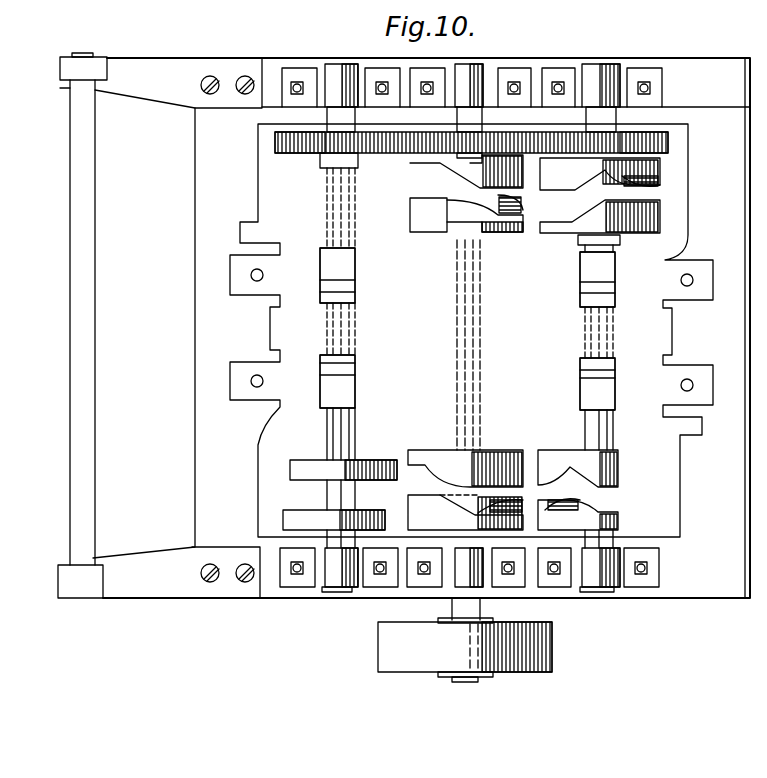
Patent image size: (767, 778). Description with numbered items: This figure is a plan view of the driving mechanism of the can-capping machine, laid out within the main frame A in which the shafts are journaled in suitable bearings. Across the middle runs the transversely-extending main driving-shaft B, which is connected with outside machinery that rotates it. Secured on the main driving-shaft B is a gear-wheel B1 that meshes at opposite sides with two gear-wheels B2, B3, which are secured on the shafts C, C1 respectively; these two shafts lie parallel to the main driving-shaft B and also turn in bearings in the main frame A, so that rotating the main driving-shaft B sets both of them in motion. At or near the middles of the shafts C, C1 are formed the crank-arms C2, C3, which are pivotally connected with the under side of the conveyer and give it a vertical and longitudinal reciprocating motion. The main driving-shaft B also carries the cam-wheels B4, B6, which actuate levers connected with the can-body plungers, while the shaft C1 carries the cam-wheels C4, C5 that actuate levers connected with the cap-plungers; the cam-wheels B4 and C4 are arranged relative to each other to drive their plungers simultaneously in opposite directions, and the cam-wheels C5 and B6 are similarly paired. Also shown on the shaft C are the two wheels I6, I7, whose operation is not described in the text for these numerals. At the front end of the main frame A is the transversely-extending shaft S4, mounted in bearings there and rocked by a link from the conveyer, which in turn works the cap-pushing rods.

The main frame A is at (421, 328).
The transversely-extending shaft S4 is at (67, 325).
The main driving-shaft B is at (465, 373).
The gear-wheel B1 is at (445, 152).
The gear-wheel B2 is at (300, 152).
The gear-wheel B3 is at (668, 146).
The cam-wheel B4 is at (436, 440).
The cam-wheel B6 is at (432, 232).
The shaft C is at (325, 216).
The shaft C1 is at (585, 427).
The crank-arm C2 is at (350, 343).
The crank-arm C3 is at (590, 332).
The cam-wheel C4 is at (660, 222).
The cam-wheel C5 is at (680, 470).
The upper gear on left shaft I6 is at (312, 450).
The lower gear on left shaft I7 is at (298, 500).